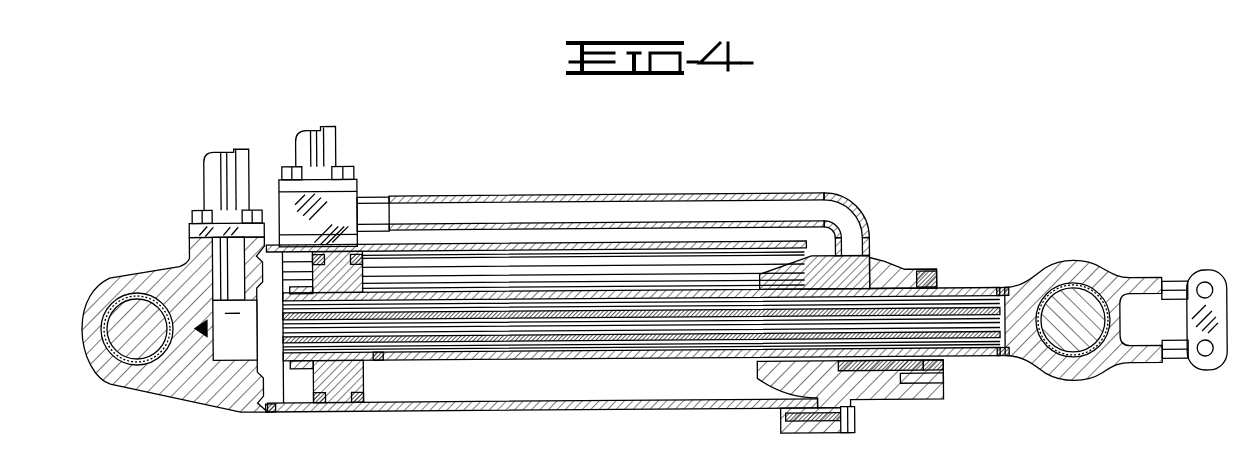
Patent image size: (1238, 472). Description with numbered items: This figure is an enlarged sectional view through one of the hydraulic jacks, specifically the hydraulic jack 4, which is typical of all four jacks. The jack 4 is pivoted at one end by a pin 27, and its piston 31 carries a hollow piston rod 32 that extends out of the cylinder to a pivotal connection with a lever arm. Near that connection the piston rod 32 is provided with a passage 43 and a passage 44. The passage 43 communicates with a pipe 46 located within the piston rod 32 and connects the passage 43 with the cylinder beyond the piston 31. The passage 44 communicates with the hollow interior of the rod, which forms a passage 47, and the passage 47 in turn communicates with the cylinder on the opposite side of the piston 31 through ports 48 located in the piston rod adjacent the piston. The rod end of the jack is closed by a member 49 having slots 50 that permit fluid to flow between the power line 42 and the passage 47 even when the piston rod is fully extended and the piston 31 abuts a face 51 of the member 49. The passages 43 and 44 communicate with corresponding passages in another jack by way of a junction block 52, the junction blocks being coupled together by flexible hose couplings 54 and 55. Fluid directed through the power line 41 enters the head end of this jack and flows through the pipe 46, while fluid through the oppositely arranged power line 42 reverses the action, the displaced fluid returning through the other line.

The hydraulic jack 4 is at (523, 406).
The pin 27 is at (140, 355).
The piston 31 is at (349, 401).
The piston rod 32 is at (605, 360).
The power line 41 is at (217, 182).
The power line 42 is at (339, 151).
The passage 43 is at (1112, 248).
The passage 44 is at (1068, 374).
The pipe 46 is at (782, 326).
The passage 47 is at (477, 348).
The ports 48 is at (383, 361).
The member 49 is at (880, 383).
The slots 50 is at (768, 278).
The face 51 is at (760, 377).
The junction block 52 is at (1190, 322).
The flexible hose coupling 54 is at (1200, 362).
The flexible hose coupling 55 is at (1203, 289).